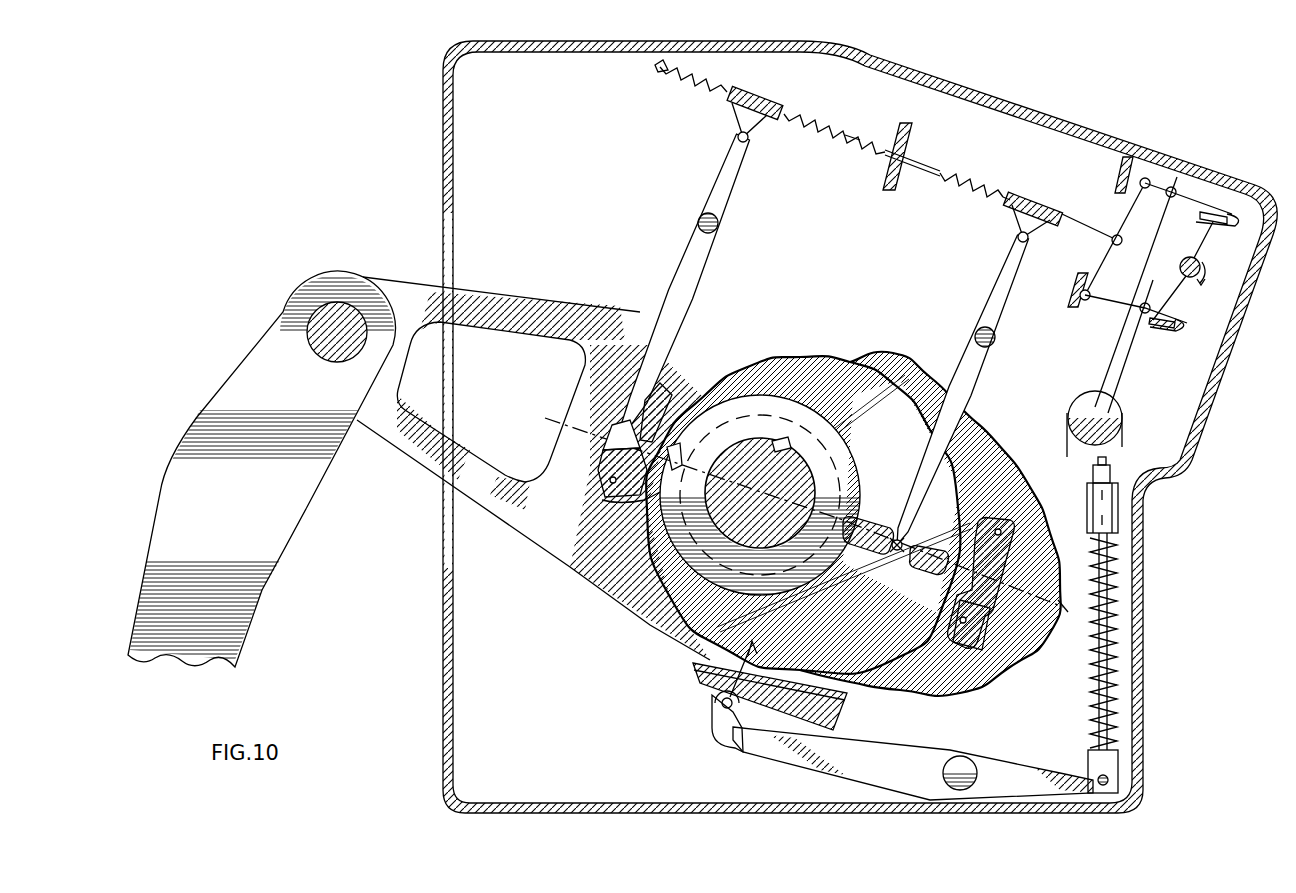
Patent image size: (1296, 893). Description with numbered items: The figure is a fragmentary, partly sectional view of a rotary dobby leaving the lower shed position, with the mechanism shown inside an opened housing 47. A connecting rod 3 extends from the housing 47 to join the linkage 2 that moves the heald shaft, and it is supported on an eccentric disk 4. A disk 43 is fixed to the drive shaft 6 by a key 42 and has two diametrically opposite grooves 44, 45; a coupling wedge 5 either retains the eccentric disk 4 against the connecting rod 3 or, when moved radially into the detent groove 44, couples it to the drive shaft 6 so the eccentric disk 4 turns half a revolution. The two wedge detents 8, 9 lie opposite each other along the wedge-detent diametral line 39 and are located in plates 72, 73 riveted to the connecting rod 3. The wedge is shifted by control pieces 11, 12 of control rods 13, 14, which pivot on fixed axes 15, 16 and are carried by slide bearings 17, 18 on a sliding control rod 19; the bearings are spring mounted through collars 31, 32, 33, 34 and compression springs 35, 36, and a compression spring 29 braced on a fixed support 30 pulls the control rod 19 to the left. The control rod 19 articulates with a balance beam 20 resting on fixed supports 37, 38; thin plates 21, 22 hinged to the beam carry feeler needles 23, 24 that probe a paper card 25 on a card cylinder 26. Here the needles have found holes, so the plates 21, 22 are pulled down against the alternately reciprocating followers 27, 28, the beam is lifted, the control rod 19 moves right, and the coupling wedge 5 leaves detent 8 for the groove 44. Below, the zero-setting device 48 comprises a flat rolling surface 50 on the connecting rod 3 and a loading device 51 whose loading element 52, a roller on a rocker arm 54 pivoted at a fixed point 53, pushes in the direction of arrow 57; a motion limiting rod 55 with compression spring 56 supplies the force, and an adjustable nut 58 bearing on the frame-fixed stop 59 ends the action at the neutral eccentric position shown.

The linkage 2 is at (310, 415).
The connecting rod 3 is at (580, 558).
The eccentric disk 4 is at (677, 577).
The coupling wedge 5 is at (868, 530).
The drive shaft 6 is at (795, 478).
The detent 8 is at (978, 545).
The detent 9 is at (664, 405).
The control piece 11 is at (898, 552).
The control piece 12 is at (613, 445).
The control rod 13 is at (968, 358).
The control rod 14 is at (680, 300).
The fixed axis 15 is at (978, 330).
The fixed axis 16 is at (700, 218).
The slide bearing 17 is at (1035, 195).
The slide bearing 18 is at (757, 100).
The control rod 19 is at (910, 165).
The balance beam 20 is at (1125, 245).
The thin plate 21 is at (1168, 200).
The thin plate 22 is at (1112, 302).
The feeler needle 23 is at (1105, 380).
The feeler needle 24 is at (1130, 360).
The paper card 25 is at (1123, 438).
The card cylinder 26 is at (1080, 425).
The follower 27 is at (1212, 228).
The follower 28 is at (1165, 328).
The compression spring 29 is at (855, 138).
The fixed support 30 is at (883, 175).
The collar 31 is at (1070, 220).
The collar 32 is at (942, 172).
The collar 33 is at (800, 118).
The collar 34 is at (655, 70).
The compression spring 35 is at (990, 198).
The compression spring 36 is at (685, 80).
The fixed support 37 is at (1078, 292).
The fixed support 38 is at (1115, 175).
The wedge-detent diametral line 39 is at (1052, 614).
The key 42 is at (783, 440).
The disk 43 is at (693, 558).
The detent groove 44 is at (843, 555).
The groove 45 is at (620, 503).
The housing 47 is at (446, 775).
The zero-setting device 48 is at (886, 725).
The rolling surface 50 is at (712, 690).
The loading device 51 is at (811, 803).
The loading element 52 is at (720, 708).
The fixed pivot point 53 is at (968, 762).
The rocker arm 54 is at (795, 752).
The motion limiting rod 55 is at (1112, 650).
The compression spring 56 is at (1110, 588).
The arrow 57 is at (770, 660).
The adjustable nut 58 is at (1112, 475).
The stop 59 is at (1107, 508).
The plate 72 is at (975, 635).
The plate 73 is at (600, 485).